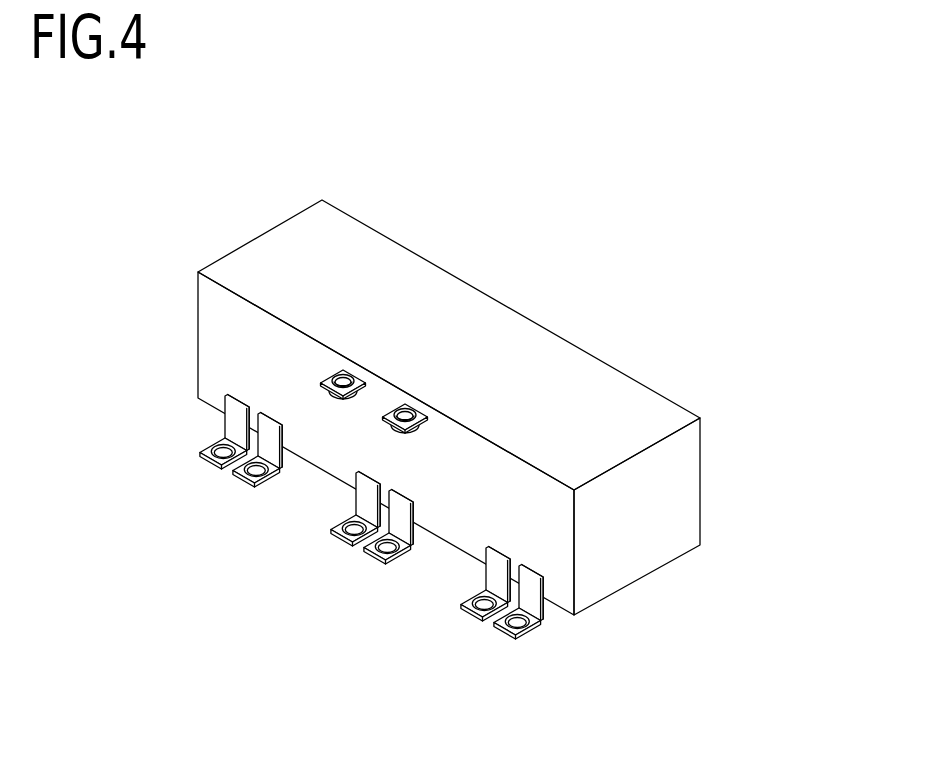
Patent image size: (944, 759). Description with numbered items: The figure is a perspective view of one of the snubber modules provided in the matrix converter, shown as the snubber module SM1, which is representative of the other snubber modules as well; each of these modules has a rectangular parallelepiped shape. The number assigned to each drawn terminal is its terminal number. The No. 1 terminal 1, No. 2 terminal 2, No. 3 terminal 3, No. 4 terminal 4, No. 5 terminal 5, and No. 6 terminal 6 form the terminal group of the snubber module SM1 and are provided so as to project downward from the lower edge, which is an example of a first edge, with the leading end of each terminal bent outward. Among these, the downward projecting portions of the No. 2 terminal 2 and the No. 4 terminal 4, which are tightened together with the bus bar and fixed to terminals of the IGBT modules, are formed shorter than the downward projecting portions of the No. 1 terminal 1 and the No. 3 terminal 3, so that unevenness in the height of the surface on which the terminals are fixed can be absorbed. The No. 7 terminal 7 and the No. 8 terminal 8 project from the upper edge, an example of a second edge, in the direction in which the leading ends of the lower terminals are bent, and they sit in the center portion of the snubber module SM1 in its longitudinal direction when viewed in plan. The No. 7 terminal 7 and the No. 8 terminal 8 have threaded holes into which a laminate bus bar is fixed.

The snubber module SM1 is at (440, 306).
The No. 1 terminal 1 is at (517, 614).
The No. 2 terminal 2 is at (482, 598).
The No. 3 terminal 3 is at (386, 539).
The No. 4 terminal 4 is at (352, 521).
The No. 5 terminal 5 is at (254, 462).
The No. 6 terminal 6 is at (222, 441).
The No. 7 terminal 7 is at (405, 434).
The No. 8 terminal 8 is at (343, 400).